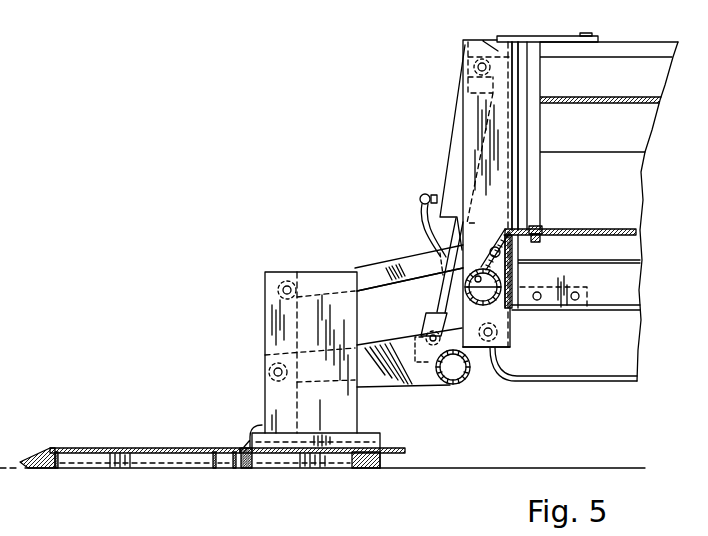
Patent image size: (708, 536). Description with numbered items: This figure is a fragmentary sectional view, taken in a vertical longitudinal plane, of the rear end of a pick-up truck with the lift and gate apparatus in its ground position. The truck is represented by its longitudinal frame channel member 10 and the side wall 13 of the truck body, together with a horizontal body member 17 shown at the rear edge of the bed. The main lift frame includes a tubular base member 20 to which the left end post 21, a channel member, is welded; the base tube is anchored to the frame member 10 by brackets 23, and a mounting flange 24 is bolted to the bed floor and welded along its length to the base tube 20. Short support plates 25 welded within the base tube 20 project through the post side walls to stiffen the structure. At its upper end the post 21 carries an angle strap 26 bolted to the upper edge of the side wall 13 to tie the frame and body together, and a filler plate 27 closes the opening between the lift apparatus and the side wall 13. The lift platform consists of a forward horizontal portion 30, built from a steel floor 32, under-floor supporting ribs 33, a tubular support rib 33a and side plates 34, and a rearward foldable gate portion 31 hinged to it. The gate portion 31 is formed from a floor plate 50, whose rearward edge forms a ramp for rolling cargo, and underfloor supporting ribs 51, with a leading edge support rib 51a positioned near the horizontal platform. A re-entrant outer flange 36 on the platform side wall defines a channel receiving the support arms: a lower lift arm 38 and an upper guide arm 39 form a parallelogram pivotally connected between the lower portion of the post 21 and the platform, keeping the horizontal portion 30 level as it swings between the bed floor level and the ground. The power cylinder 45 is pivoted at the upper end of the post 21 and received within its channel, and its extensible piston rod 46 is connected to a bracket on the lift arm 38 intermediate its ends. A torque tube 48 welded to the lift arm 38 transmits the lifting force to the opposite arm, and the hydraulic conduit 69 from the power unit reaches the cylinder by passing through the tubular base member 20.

The longitudinal frame channel member 10 is at (618, 297).
The side wall 13 is at (627, 65).
The sill plate 17 is at (603, 230).
The base member 20 is at (440, 293).
The left end post 21 is at (494, 106).
The bracket 23 is at (505, 298).
The mounting flange 24 is at (495, 246).
The support plate 25 is at (461, 325).
The angle strap 26 is at (552, 38).
The filler plate 27 is at (518, 148).
The horizontal platform portion 30 is at (320, 479).
The foldable gate portion 31 is at (107, 478).
The floor 32 is at (393, 449).
The under-floor supporting rib 33 is at (365, 468).
The horizontal platform support rib 33a is at (248, 463).
The side plate 34 is at (365, 437).
The re-entrant outer flange 36 is at (300, 311).
The lower lift arm 38 is at (410, 383).
The upper guide arm 39 is at (381, 248).
The power cylinder 45 is at (452, 164).
The piston rod 46 is at (421, 224).
The torque tube 48 is at (474, 374).
The floor plate 50 is at (127, 448).
The underfloor supporting rib 51 is at (43, 467).
The leading edge support rib 51a is at (220, 460).
The hydraulic conduit 69 is at (500, 282).